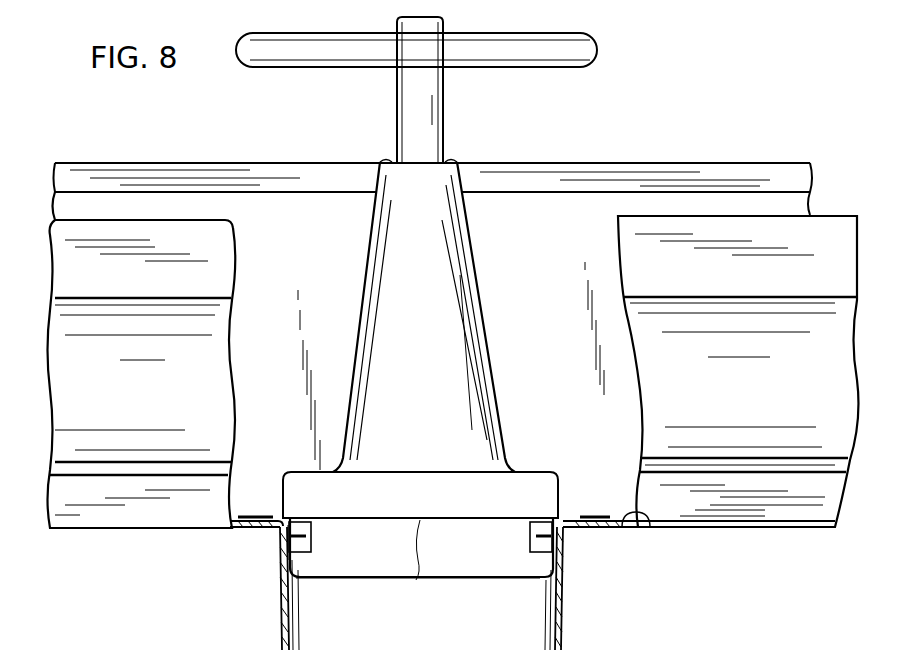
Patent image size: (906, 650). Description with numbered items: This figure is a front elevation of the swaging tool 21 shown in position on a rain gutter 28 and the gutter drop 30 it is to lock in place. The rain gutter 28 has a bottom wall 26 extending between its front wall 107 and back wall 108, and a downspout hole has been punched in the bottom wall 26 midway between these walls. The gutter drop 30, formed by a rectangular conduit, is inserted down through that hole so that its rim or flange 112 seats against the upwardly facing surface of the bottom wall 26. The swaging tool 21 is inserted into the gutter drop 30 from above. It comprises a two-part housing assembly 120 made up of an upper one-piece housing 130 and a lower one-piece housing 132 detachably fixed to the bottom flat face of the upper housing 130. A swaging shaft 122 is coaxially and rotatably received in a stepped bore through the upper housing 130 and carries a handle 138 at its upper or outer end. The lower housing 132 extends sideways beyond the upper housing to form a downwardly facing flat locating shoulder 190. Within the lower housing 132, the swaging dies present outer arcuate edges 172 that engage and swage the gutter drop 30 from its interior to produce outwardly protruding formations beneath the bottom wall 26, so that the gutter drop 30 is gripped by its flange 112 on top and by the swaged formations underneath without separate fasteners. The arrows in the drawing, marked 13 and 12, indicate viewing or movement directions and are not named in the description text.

The handle 138 is at (596, 45).
The swaging shaft 122 is at (446, 112).
The swaging tool 21 is at (384, 126).
The rain gutter 28 is at (707, 166).
The front wall 107 is at (212, 248).
The back wall 108 is at (342, 248).
The upper one-piece housing 130 is at (483, 318).
The housing assembly 120 is at (496, 372).
The flange 112 is at (578, 516).
The upward direction 13 is at (261, 538).
The downward direction 12 is at (255, 520).
The bottom wall 26 is at (640, 518).
The outer arcuate edge 172 is at (313, 537).
The lower one-piece housing 132 is at (393, 565).
The locating shoulder 190 is at (418, 580).
The gutter drop 30 is at (560, 628).